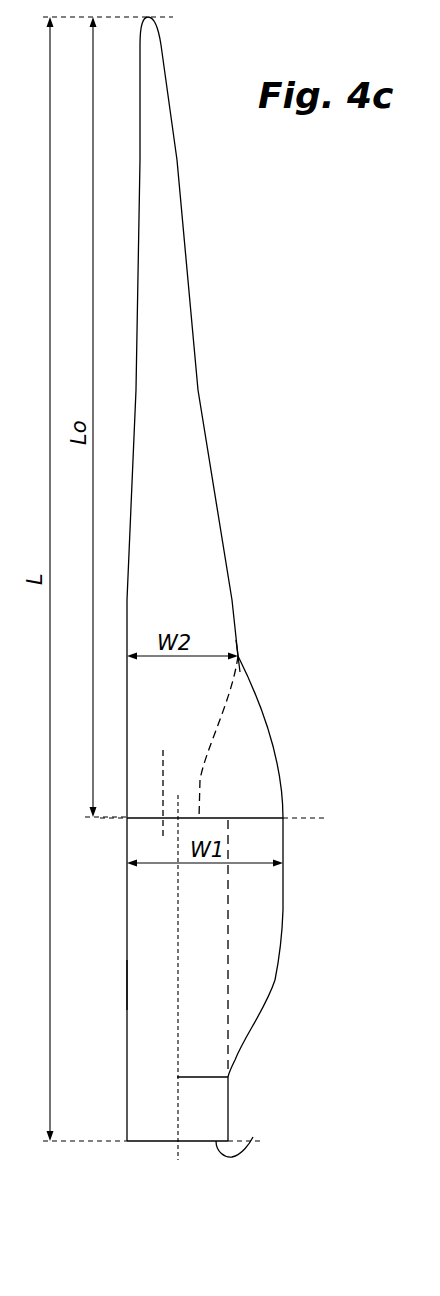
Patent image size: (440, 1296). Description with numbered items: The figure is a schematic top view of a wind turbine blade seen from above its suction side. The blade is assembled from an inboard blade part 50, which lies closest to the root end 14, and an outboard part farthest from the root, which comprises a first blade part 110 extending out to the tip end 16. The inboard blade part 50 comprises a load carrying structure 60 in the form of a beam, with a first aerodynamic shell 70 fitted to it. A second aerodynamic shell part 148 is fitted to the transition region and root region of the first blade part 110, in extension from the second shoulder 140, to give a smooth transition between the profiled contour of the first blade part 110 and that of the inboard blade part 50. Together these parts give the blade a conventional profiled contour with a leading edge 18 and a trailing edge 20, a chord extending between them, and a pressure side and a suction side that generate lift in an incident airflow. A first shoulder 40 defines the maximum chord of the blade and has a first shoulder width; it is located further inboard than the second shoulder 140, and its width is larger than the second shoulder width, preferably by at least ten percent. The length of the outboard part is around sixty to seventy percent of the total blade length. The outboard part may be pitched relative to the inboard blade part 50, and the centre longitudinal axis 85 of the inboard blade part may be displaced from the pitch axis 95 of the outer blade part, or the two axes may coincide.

The root end 14 is at (253, 1137).
The tip end 16 is at (148, 17).
The leading edge 18 is at (127, 1030).
The trailing edge 20 is at (283, 913).
The first shoulder 40 is at (283, 860).
The inboard blade part 50 is at (118, 985).
The load carrying structure 60 is at (212, 1107).
The first aerodynamic shell 70 is at (258, 993).
The centre, longitudinal axis 85 is at (228, 1077).
The pitch axis 95 is at (163, 760).
The first blade part 110 is at (217, 562).
The second shoulder 140 is at (238, 653).
The second aerodynamic shell part 148 is at (248, 748).